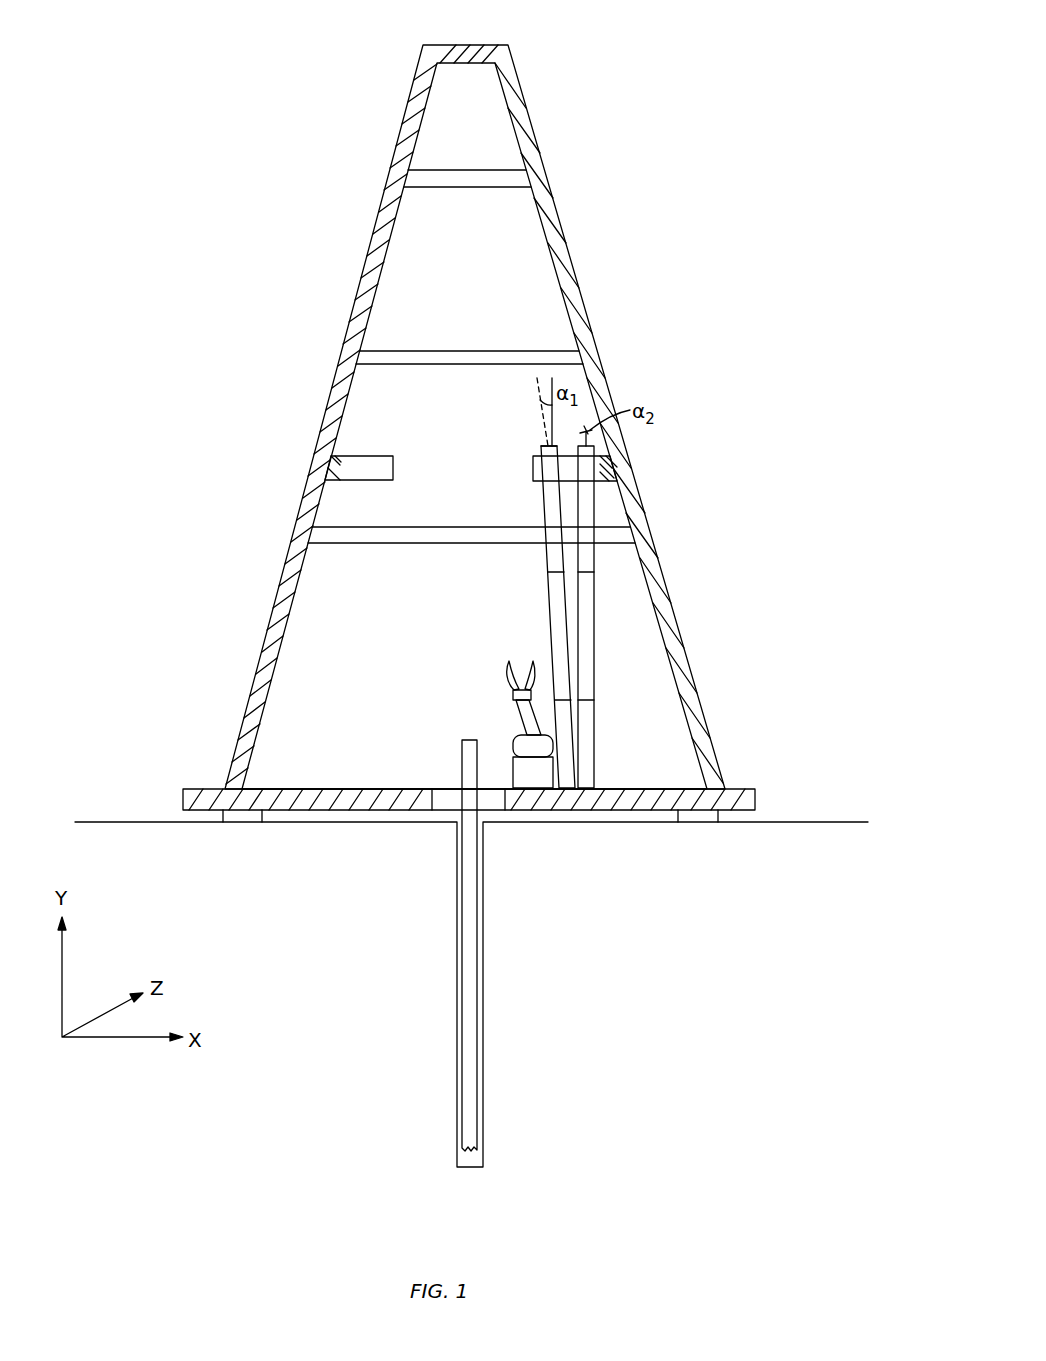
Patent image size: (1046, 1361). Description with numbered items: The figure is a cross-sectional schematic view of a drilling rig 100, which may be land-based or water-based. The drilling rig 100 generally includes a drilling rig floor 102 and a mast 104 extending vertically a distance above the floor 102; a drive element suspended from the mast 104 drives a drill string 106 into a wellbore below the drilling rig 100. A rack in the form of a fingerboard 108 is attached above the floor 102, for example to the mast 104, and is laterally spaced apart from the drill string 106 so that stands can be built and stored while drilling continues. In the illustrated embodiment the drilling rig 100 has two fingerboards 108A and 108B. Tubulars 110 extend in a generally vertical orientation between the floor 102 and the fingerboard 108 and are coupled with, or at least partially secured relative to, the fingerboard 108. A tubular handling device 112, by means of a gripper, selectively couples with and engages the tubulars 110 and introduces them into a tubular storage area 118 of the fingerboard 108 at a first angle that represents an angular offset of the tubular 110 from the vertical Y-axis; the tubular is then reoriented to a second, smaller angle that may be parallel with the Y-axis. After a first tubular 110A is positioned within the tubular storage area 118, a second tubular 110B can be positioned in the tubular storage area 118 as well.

The drilling rig 100 is at (718, 57).
The drilling rig floor 102 is at (742, 789).
The mast 104 is at (380, 208).
The drill string 106 is at (470, 1005).
The fingerboard 108 is at (509, 479).
The fingerboard 108A is at (537, 482).
The fingerboard 108B is at (360, 482).
The tubulars 110 is at (572, 617).
The first tubular 110A is at (592, 662).
The second tubular 110B is at (556, 615).
The tubular handling device 112 is at (531, 778).
The tubular storage area 118 is at (540, 460).